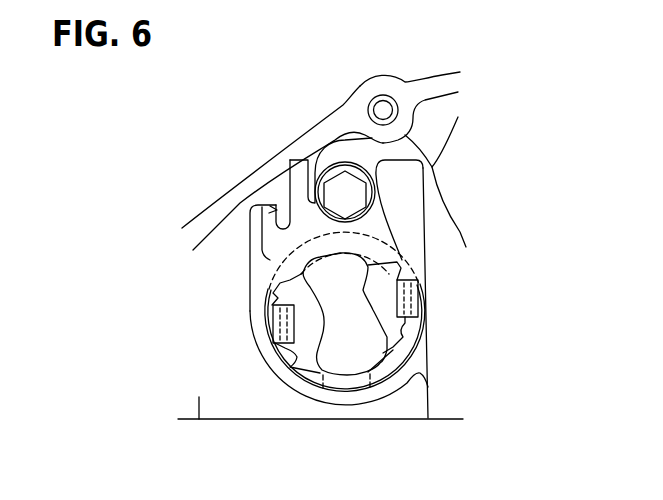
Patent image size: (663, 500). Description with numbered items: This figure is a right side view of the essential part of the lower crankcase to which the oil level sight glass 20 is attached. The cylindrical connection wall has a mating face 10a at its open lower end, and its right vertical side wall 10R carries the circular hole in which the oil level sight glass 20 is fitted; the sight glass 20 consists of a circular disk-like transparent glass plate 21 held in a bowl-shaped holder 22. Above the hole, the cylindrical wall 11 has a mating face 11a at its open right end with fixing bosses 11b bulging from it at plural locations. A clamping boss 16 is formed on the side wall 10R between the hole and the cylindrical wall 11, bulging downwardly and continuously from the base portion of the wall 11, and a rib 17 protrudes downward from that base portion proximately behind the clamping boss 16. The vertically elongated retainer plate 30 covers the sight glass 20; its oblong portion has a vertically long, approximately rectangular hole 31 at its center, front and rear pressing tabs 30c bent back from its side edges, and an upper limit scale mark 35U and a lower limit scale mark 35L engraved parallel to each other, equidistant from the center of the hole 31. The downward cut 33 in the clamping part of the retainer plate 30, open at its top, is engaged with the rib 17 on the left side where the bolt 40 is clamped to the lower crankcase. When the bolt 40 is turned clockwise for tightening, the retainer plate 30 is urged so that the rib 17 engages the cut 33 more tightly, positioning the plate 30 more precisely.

The right vertical side wall 10R is at (199, 419).
The mating face 10a is at (352, 420).
The cylindrical wall 11 is at (437, 73).
The mating face 11a is at (342, 108).
The fixing bosses 11b is at (387, 74).
The clamping boss 16 is at (430, 165).
The rib 17 is at (280, 203).
The oil level sight glass 20 is at (172, 263).
The transparent glass plate 21 is at (340, 318).
The holder 22 is at (297, 281).
The retainer plate 30 is at (380, 247).
The pressing tabs 30c is at (268, 337).
The rectangular hole 31 is at (349, 298).
The downward cut 33 is at (276, 210).
The lower limit scale mark 35L is at (293, 388).
The upper limit scale mark 35U is at (253, 257).
The bolt 40 is at (342, 185).